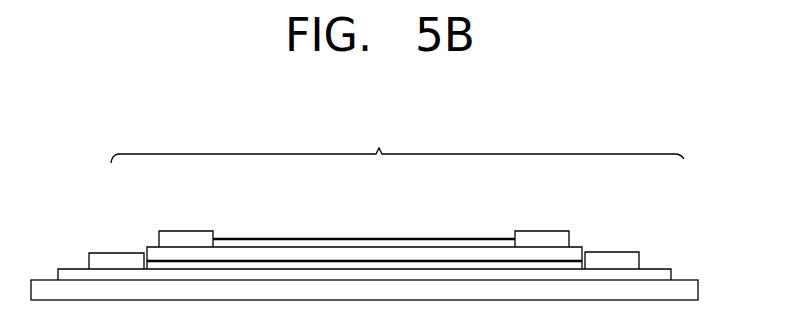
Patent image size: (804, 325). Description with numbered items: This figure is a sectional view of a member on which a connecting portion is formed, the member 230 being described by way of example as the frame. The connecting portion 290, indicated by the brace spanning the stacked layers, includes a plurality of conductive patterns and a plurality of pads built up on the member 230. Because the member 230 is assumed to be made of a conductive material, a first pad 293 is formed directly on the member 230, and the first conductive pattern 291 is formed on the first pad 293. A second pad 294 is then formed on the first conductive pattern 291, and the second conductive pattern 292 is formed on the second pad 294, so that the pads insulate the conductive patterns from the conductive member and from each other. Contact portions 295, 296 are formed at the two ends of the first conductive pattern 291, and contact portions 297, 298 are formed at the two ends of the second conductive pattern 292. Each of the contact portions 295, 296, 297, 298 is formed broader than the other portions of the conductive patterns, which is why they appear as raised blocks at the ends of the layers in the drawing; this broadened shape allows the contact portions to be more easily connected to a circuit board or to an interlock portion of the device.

The member 230 is at (698, 289).
The connecting portion 290 is at (397, 141).
The first conductive pattern 291 is at (435, 260).
The second conductive pattern 292 is at (297, 239).
The first pad 293 is at (660, 272).
The second pad 294 is at (358, 253).
The contact portion 295 is at (120, 259).
The contact portion 296 is at (609, 258).
The contact portion 297 is at (187, 237).
The contact portion 298 is at (539, 236).